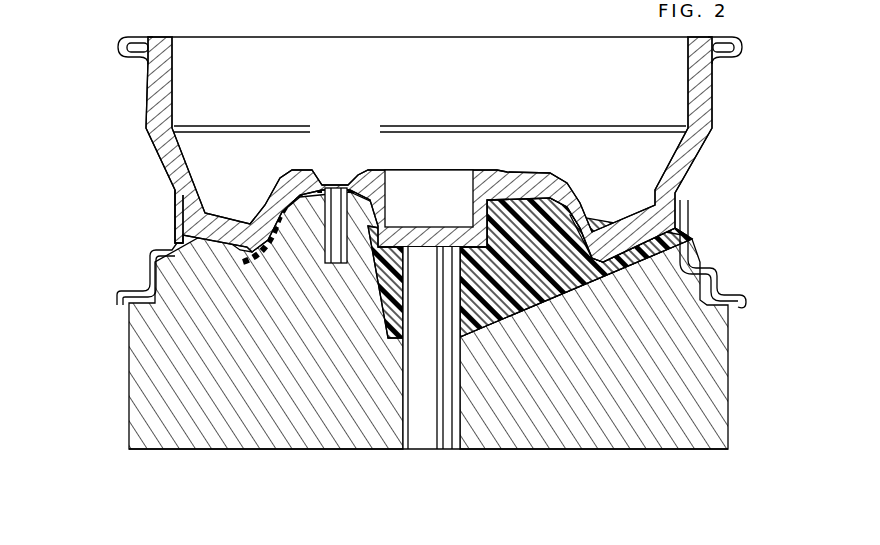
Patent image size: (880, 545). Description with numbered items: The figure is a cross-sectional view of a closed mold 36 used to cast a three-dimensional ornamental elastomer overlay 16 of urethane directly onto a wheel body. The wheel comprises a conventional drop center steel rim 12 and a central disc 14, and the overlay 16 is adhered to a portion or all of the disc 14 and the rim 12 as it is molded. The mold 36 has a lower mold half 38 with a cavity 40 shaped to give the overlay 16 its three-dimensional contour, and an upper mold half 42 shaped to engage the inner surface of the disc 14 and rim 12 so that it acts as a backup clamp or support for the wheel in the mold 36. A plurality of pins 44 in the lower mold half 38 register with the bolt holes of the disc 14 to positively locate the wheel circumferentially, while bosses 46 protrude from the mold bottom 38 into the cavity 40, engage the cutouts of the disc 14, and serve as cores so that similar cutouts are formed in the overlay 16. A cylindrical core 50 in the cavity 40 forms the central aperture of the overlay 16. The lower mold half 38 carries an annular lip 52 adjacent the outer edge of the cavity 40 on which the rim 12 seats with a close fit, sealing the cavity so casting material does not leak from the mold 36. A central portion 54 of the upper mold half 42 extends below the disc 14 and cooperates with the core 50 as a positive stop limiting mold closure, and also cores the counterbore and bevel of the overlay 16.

The drop center steel rim 12 is at (170, 180).
The central disc 14 is at (650, 267).
The ornamental three-dimensional contoured overlay 16 is at (547, 287).
The mold 36 is at (118, 315).
The lower mold half 38 is at (130, 380).
The cavity 40 is at (538, 434).
The upper mold half 42 is at (272, 66).
The pins 44 is at (334, 205).
The bosses 46 is at (172, 246).
The cylindrical core 50 is at (432, 432).
The annular lip 52 is at (697, 275).
The central portion 54 is at (433, 240).